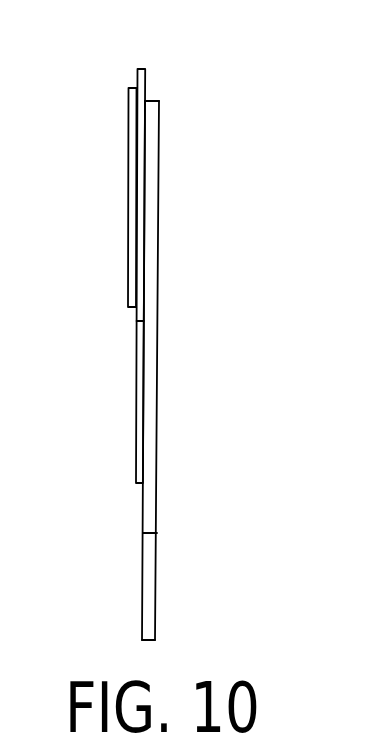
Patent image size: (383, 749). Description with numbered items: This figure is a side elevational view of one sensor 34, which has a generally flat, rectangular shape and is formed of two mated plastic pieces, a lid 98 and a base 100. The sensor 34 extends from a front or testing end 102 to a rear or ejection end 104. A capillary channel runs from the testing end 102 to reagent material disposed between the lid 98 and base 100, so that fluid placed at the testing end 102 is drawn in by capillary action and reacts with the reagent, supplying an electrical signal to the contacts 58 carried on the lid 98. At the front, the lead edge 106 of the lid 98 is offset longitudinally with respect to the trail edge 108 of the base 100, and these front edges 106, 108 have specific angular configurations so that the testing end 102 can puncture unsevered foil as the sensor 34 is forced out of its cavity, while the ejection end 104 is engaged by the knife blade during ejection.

The sensor 34 is at (228, 526).
The contacts 58 is at (133, 208).
The lid 98 is at (138, 378).
The base 100 is at (150, 186).
The testing end 102 is at (172, 66).
The ejection end 104 is at (150, 641).
The lead edge 106 is at (141, 68).
The trail edge 108 is at (150, 99).